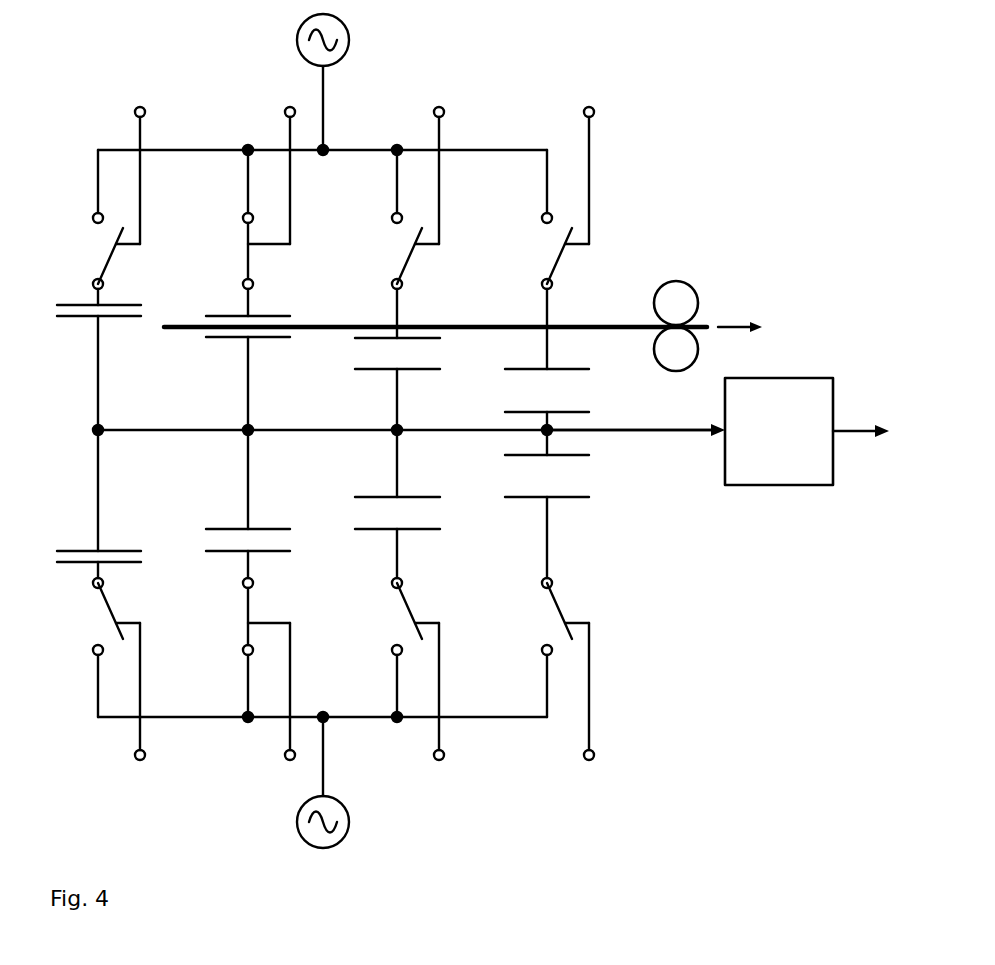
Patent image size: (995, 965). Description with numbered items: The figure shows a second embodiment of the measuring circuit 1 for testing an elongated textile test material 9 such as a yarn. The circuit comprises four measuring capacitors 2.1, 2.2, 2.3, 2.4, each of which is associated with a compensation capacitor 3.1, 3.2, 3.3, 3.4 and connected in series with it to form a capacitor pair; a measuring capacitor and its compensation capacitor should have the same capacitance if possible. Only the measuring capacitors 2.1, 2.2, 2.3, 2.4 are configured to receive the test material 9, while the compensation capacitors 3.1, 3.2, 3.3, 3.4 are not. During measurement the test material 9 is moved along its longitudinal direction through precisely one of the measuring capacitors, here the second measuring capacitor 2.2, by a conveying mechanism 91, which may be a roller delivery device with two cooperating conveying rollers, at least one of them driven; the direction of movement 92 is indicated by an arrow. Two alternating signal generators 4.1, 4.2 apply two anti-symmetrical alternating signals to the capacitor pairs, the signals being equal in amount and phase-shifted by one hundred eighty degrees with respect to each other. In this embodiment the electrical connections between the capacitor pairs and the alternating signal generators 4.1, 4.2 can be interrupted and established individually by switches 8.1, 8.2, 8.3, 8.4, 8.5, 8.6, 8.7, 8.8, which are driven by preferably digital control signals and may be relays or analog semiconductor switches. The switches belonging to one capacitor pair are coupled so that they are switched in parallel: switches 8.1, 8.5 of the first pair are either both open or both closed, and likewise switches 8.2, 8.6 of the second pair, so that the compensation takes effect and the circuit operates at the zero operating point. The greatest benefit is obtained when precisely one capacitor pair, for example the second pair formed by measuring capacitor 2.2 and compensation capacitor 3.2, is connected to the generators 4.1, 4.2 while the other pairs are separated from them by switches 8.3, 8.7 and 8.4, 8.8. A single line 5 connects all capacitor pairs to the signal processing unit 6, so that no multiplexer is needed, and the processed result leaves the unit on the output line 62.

The measuring circuit 1 is at (93, 48).
The measuring capacitor 2.1 is at (118, 318).
The measuring capacitor 2.2 is at (270, 340).
The measuring capacitor 2.3 is at (418, 371).
The measuring capacitor 2.4 is at (572, 368).
The compensation capacitor 3.1 is at (118, 549).
The compensation capacitor 3.2 is at (270, 527).
The compensation capacitor 3.3 is at (418, 495).
The compensation capacitor 3.4 is at (567, 499).
The alternating signal generator 4.1 is at (351, 40).
The alternating signal generator 4.2 is at (351, 822).
The line for output signals 5 is at (633, 433).
The signal processing unit 6 is at (783, 377).
The output line 62 is at (858, 434).
The switch 8.1 is at (101, 264).
The switch 8.2 is at (247, 264).
The switch 8.3 is at (401, 264).
The switch 8.4 is at (551, 264).
The switch 8.5 is at (101, 603).
The switch 8.6 is at (247, 603).
The switch 8.7 is at (401, 603).
The switch 8.8 is at (551, 603).
The test material 9 is at (180, 331).
The conveying mechanism 91 is at (682, 262).
The direction of movement of the test material 92 is at (742, 323).